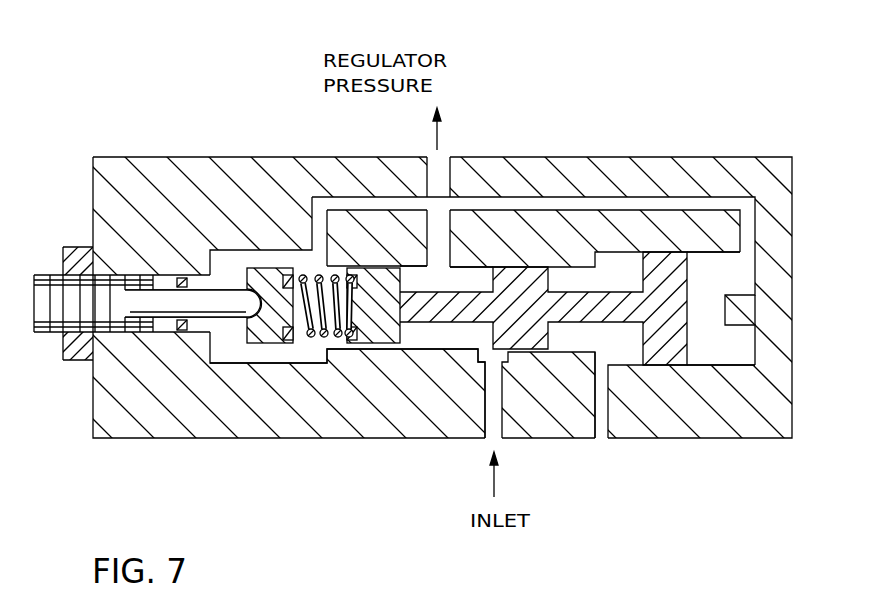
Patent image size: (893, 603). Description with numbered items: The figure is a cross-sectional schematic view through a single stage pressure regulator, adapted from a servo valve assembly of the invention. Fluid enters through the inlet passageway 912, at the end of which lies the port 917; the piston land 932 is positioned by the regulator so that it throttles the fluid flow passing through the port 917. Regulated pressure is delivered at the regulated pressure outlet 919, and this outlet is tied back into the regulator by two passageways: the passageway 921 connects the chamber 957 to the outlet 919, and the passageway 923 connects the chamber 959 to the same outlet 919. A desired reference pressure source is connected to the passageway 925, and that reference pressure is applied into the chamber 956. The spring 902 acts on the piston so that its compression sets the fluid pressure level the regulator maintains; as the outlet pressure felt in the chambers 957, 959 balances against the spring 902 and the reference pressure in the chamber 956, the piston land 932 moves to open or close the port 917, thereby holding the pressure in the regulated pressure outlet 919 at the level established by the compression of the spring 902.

The spring 902 is at (306, 340).
The inlet passageway 912 is at (485, 417).
The port 917 is at (477, 365).
The regulated pressure outlet 919 is at (457, 182).
The passageway 921 is at (333, 195).
The passageway 923 is at (598, 195).
The passageway 925 is at (570, 430).
The piston land 932 is at (528, 265).
The chamber 956 is at (618, 345).
The chamber 957 is at (306, 262).
The chamber 959 is at (720, 272).